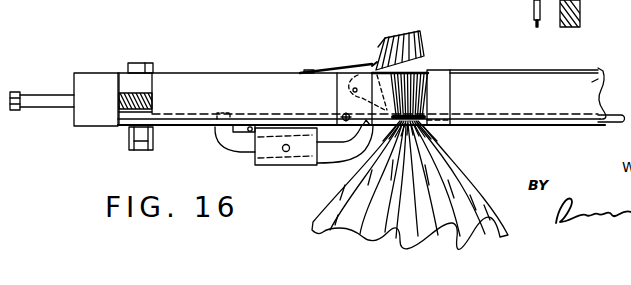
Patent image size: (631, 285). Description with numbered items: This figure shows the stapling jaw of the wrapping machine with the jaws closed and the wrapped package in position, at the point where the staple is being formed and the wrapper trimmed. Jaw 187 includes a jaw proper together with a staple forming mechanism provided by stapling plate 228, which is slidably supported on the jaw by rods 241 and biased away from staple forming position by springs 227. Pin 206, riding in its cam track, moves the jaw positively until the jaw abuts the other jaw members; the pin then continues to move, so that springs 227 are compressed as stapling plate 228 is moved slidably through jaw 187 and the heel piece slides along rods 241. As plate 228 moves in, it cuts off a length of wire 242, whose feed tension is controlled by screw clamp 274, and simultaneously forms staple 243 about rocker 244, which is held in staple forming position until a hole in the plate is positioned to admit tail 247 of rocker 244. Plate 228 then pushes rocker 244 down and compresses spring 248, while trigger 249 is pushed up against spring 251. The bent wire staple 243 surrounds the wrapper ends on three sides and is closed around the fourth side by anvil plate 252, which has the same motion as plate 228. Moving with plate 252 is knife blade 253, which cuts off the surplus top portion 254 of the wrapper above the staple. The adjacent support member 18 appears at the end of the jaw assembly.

The support member 18 is at (592, 82).
The jaw 187 is at (247, 79).
The pin 206 is at (137, 146).
The springs 227 is at (136, 92).
The stapling plate 228 is at (124, 122).
The rods 241 is at (44, 98).
The wire 242 is at (535, 19).
The staple 243 is at (425, 124).
The rocker 244 is at (339, 150).
The tail 247 is at (222, 137).
The spring 248 is at (253, 131).
The trigger 249 is at (378, 47).
The spring 251 is at (341, 70).
The anvil plate 252 is at (617, 121).
The knife blade 253 is at (493, 72).
The surplus top portion 254 is at (424, 44).
The screw clamp 274 is at (322, 207).